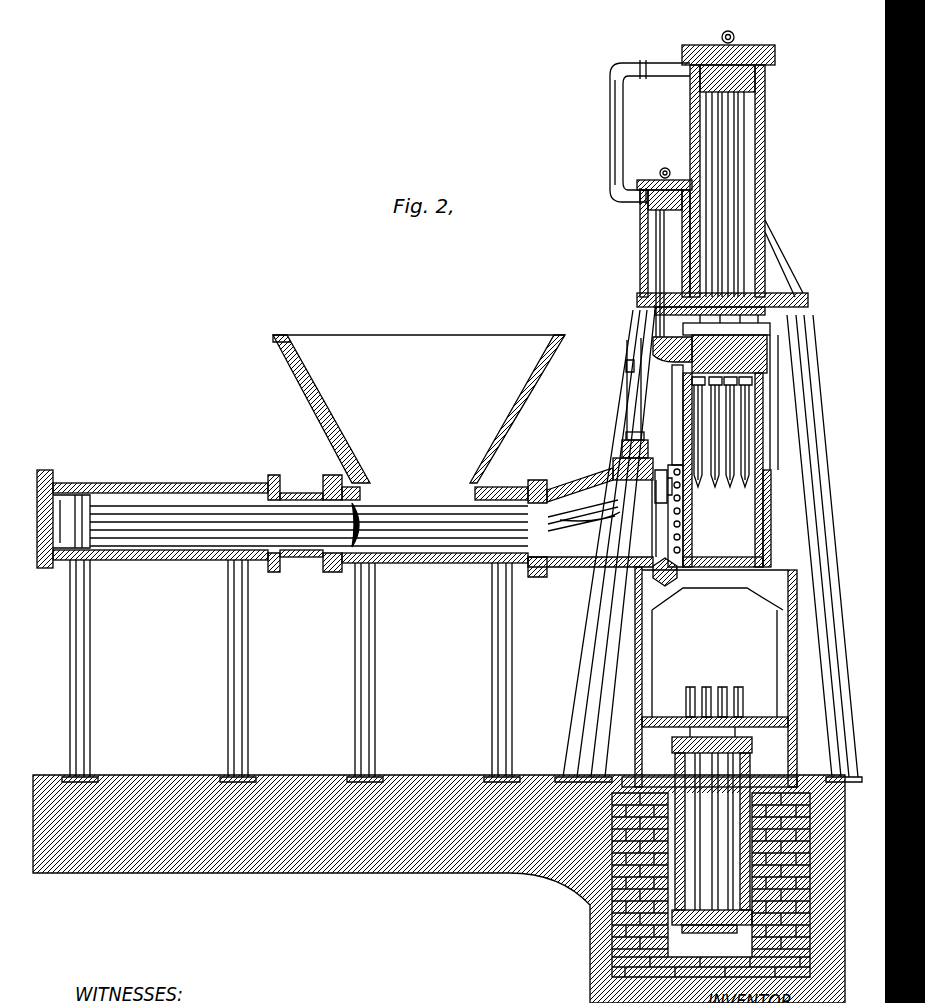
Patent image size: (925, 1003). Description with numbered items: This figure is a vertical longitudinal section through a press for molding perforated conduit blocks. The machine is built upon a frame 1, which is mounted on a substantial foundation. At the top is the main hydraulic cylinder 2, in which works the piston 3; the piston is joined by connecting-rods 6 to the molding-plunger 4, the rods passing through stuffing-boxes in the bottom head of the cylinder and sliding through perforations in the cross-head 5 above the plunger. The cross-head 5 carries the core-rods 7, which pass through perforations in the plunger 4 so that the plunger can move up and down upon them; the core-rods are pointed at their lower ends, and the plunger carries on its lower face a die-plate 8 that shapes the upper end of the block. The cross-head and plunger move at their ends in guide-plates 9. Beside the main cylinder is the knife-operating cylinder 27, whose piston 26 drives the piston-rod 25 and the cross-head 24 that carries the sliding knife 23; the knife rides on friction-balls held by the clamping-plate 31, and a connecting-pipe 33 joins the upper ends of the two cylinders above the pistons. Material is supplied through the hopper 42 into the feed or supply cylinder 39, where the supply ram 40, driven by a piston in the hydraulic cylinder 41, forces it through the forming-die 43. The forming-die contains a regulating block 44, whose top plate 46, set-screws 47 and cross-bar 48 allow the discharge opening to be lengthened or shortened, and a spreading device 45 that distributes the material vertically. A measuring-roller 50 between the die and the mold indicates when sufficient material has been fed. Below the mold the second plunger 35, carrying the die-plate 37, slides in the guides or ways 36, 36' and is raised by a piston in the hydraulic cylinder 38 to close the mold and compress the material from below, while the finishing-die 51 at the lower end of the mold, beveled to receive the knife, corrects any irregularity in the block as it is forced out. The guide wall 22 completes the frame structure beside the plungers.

The frame 1 is at (86, 697).
The main hydraulic cylinder 2 is at (765, 167).
The piston 3 is at (743, 66).
The molding-plunger 4 is at (760, 360).
The cross-head 5 is at (768, 336).
The connecting-rods 6 is at (727, 120).
The core-rods 7 is at (735, 407).
The die-plate 8 is at (752, 382).
The guide-plates 9 is at (683, 412).
The guide wall 22 is at (764, 527).
The sliding knife 23 is at (672, 390).
The cross-head 24 is at (665, 350).
The piston-rod 25 is at (656, 258).
The piston 26 is at (650, 205).
The knife-operating cylinder 27 is at (645, 230).
The clamping-plate 31 is at (673, 517).
The connecting-pipe 33 is at (612, 145).
The second plunger 35 is at (746, 704).
The guides or ways 36 is at (711, 677).
The guides or ways 36' is at (772, 678).
The die-plate 37 is at (693, 688).
The hydraulic cylinder 38 is at (680, 887).
The feed or supply cylinder 39 is at (500, 491).
The supply ram or plunger 40 is at (333, 556).
The hydraulic cylinder 41 is at (292, 518).
The hopper 42 is at (419, 409).
The forming-die 43 is at (575, 490).
The regulating plate or block 44 is at (626, 466).
The spreading device 45 is at (604, 515).
The top plate 46 is at (660, 470).
The set-screws 47 is at (626, 420).
The cross-bar 48 is at (620, 446).
The measuring-roller 50 is at (672, 586).
The finishing-die 51 is at (762, 556).